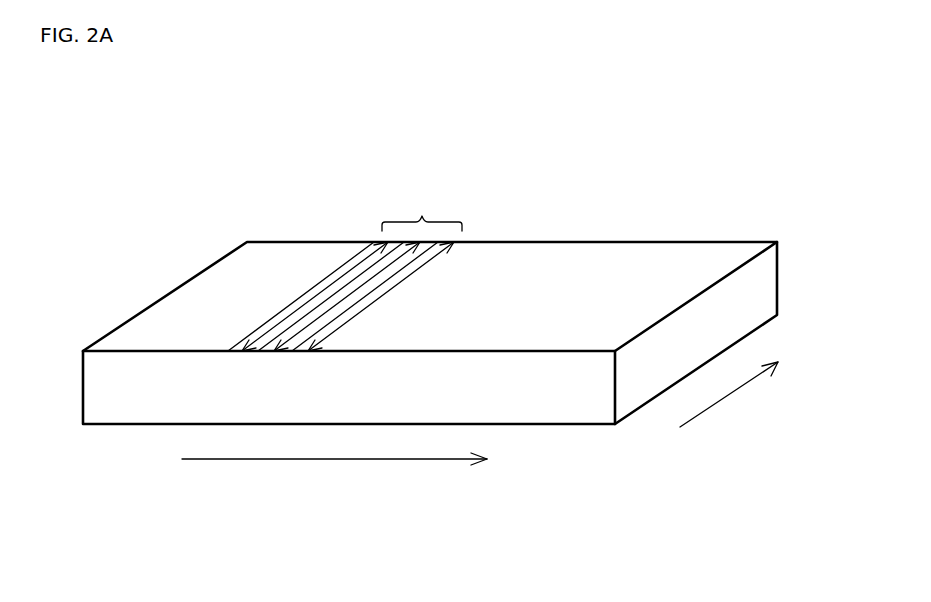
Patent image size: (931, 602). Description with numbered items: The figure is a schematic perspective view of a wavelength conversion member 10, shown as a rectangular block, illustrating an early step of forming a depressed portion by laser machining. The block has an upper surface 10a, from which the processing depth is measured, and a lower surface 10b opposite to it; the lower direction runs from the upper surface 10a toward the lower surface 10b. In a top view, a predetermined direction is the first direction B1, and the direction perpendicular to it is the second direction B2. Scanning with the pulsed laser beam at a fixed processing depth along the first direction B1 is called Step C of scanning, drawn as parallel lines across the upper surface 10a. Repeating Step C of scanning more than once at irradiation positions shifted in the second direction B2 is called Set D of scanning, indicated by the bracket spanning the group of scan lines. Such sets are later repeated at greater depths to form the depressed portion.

The wavelength conversion member 10 is at (572, 407).
The upper surface 10a is at (148, 333).
The lower surface 10b is at (143, 426).
The Step C of scanning C is at (338, 276).
The Set D of scanning D is at (422, 204).
The first direction B1 is at (729, 400).
The second direction B2 is at (334, 479).